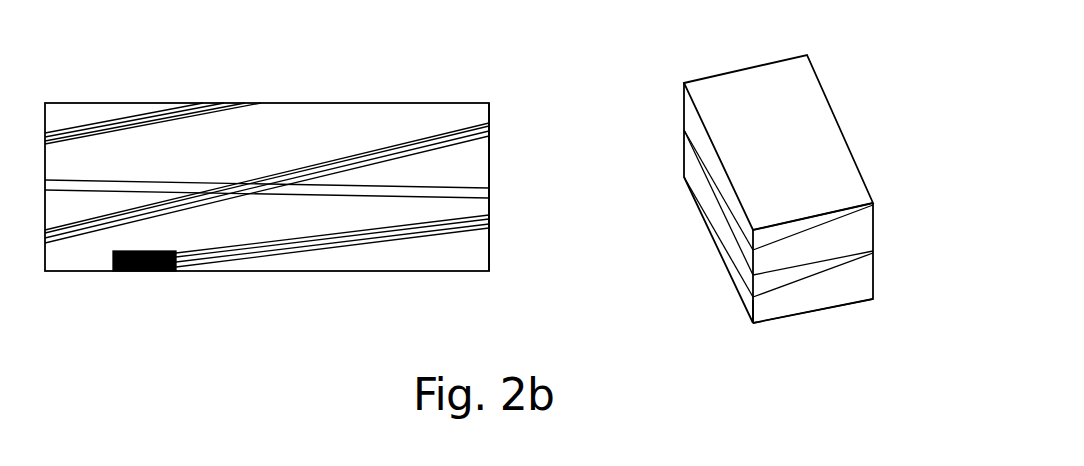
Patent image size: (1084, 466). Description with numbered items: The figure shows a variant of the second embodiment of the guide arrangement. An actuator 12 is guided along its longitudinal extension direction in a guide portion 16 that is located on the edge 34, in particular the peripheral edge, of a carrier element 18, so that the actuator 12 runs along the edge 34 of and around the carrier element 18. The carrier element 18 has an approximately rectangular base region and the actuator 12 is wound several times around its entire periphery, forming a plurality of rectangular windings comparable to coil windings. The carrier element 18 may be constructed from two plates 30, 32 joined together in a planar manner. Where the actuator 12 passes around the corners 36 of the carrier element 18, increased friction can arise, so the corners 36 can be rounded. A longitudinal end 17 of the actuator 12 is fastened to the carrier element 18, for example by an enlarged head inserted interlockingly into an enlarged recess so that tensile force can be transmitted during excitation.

The actuator 12 is at (337, 158).
The guide portion 16 is at (272, 177).
The longitudinal end 17 is at (140, 271).
The carrier element 18 is at (402, 123).
The plate 30 is at (845, 240).
The plate 32 is at (845, 295).
The edge 34 is at (490, 155).
The corner 36 is at (755, 310).